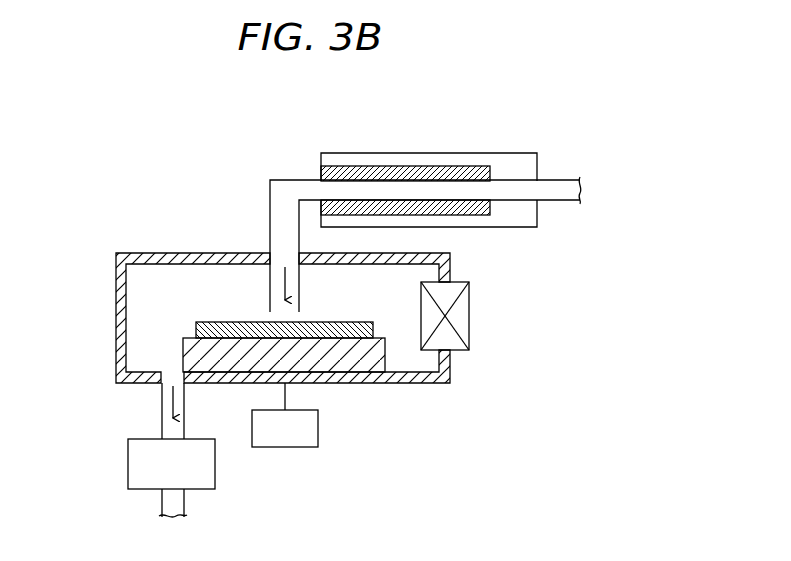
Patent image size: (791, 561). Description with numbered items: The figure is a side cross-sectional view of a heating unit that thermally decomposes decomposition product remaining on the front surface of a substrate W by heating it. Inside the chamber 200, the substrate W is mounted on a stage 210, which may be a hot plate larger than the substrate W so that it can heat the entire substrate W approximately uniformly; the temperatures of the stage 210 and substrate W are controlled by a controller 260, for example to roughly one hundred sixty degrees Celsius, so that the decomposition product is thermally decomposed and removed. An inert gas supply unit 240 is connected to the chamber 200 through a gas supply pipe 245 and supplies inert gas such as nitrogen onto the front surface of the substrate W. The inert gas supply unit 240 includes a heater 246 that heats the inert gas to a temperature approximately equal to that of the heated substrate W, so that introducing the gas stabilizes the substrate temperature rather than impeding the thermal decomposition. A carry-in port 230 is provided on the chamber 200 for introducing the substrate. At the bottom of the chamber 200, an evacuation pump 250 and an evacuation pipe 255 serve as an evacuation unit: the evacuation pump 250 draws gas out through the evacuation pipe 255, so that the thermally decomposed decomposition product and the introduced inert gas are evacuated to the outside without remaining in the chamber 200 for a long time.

The chamber 200 is at (448, 365).
The stage 210 is at (378, 367).
The substrate W is at (196, 330).
The gas supply pipe 245 is at (272, 212).
The inert gas supply unit 240 is at (397, 152).
The heater 246 is at (457, 164).
The carry-in port 230 is at (463, 310).
The evacuation pipe 255 is at (162, 415).
The evacuation pump 250 is at (128, 467).
The controller 260 is at (285, 447).